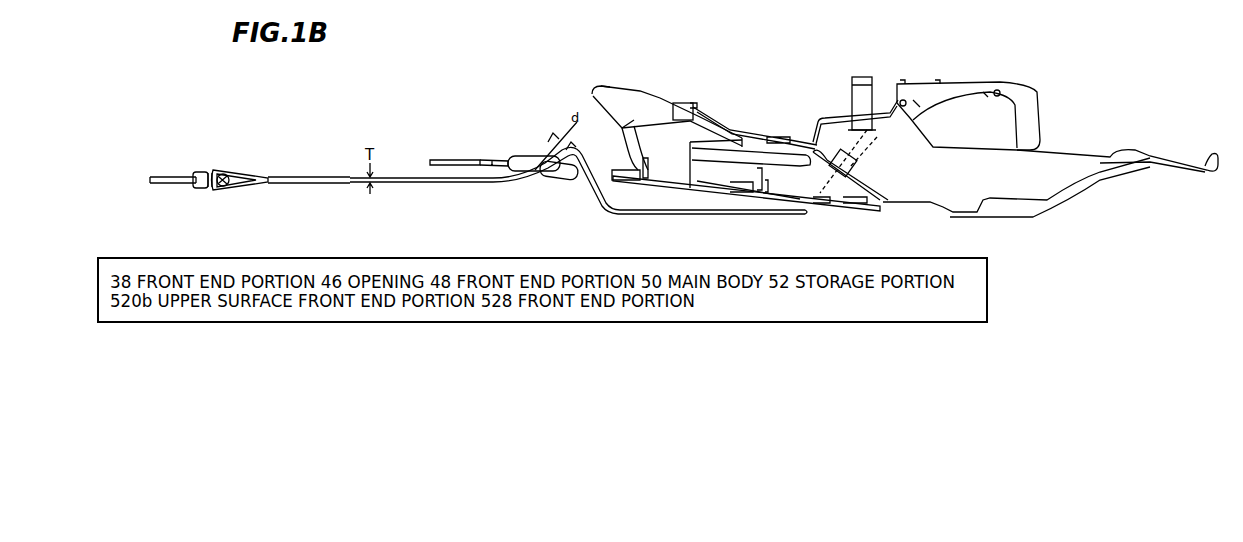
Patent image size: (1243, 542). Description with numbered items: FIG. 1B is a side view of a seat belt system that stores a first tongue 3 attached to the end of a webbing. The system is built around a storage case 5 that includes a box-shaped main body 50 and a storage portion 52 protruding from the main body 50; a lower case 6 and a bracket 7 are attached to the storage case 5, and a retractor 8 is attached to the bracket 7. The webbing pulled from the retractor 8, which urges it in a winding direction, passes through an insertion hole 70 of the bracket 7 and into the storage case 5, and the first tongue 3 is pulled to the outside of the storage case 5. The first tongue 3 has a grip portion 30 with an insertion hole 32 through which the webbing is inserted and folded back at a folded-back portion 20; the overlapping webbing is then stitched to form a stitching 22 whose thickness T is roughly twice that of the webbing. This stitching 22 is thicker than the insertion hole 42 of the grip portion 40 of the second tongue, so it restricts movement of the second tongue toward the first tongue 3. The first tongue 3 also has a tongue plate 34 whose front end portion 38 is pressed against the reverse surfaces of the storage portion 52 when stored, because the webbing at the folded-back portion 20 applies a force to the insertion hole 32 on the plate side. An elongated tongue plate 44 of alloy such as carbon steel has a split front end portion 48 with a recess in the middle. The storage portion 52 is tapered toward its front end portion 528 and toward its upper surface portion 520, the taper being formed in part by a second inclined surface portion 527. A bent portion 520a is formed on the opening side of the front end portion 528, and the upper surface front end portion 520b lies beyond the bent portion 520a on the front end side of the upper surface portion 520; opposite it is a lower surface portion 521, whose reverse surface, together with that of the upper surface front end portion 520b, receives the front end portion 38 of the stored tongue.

The first tongue 3 is at (159, 155).
The front end portion 38 is at (152, 182).
The tongue plate 34 is at (177, 184).
The grip portion 30 is at (198, 172).
The insertion hole 32 is at (210, 189).
The folded-back portion 20 is at (227, 160).
The stitching 22 is at (345, 166).
The front end portion 48 is at (430, 160).
The tongue plate 44 is at (463, 160).
The insertion hole 42 is at (543, 175).
The grip portion 40 is at (557, 173).
The lower surface portion 521 is at (593, 97).
The front end portion 528 is at (593, 89).
The second inclined surface portion 527 is at (607, 87).
The upper surface front end portion 520b is at (612, 90).
The bent portion 520a is at (628, 88).
The storage portion 52 is at (674, 98).
The storage case 5 is at (738, 46).
The main body 50 is at (733, 121).
The upper surface portion 520 is at (747, 137).
The lower case 6 is at (877, 212).
The insertion hole 70 is at (852, 166).
The retractor 8 is at (962, 100).
The bracket 7 is at (1064, 178).